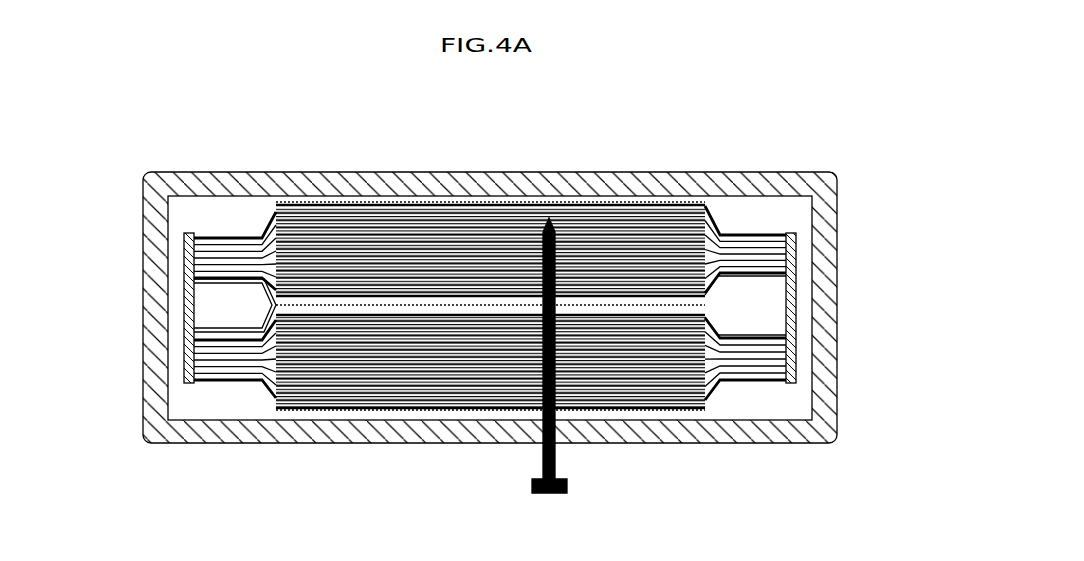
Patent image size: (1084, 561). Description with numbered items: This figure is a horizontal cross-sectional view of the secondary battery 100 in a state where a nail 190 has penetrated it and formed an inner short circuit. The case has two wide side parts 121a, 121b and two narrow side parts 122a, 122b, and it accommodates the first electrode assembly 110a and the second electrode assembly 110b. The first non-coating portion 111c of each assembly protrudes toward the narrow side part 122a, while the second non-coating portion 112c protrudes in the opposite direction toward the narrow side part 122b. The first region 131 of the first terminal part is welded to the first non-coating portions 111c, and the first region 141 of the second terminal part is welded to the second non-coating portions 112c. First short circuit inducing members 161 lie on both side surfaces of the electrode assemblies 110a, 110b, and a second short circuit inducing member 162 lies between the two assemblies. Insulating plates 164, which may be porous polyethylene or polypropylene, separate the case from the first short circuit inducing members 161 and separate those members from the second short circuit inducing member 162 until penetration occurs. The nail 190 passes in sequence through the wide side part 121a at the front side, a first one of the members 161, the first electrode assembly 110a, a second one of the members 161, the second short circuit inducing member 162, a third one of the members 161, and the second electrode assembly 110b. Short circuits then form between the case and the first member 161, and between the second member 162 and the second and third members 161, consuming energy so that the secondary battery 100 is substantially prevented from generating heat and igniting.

The secondary battery 100 is at (852, 122).
The first electrode assembly 110a is at (625, 378).
The second electrode assembly 110b is at (626, 255).
The first non-coating portion 111c is at (764, 268).
The second non-coating portion 112c is at (222, 268).
The wide side part 121a is at (323, 442).
The wide side part 121b is at (389, 175).
The narrow side part 122a is at (832, 401).
The narrow side part 122b is at (152, 389).
The first region 131 is at (797, 306).
The first region 141 is at (193, 273).
The first short circuit inducing members 161 is at (778, 226).
The second short circuit inducing member 162 is at (210, 286).
The insulating plates 164 is at (496, 295).
The nail 190 is at (548, 495).